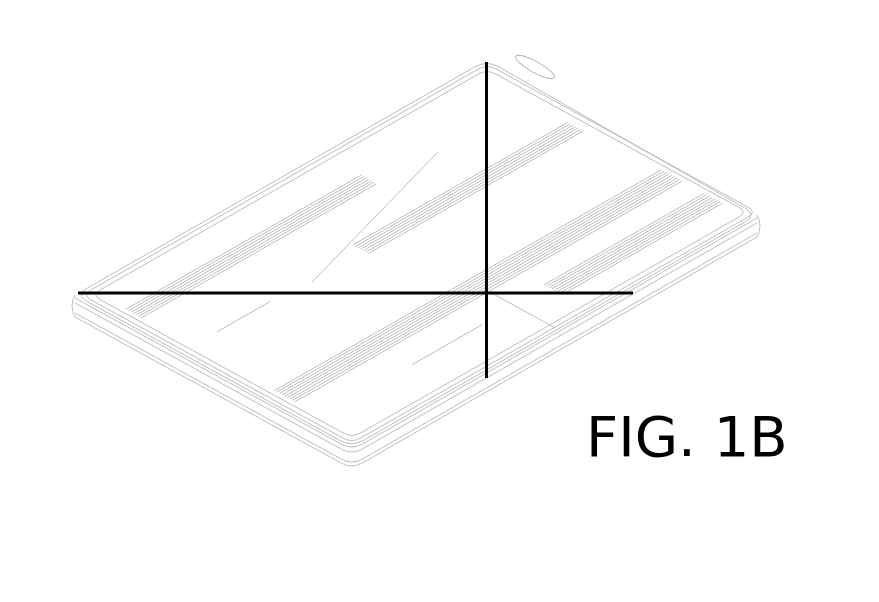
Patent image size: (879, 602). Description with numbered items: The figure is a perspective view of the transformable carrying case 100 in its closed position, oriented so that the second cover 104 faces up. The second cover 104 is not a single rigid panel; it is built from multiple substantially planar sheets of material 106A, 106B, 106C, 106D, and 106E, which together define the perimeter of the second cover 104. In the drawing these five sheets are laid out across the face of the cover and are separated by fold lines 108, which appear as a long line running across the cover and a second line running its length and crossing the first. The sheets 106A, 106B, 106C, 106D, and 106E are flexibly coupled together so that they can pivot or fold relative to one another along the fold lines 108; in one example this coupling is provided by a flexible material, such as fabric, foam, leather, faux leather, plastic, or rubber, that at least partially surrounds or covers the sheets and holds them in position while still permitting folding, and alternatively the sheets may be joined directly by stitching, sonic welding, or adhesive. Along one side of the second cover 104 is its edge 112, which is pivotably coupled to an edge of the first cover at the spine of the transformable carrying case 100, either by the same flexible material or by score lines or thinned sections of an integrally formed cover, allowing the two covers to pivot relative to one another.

The transformable carrying case 100 is at (407, 255).
The second cover 104 is at (420, 246).
The substantially planar sheet of material 106A is at (459, 265).
The substantially planar sheet of material 106B is at (571, 235).
The substantially planar sheet of material 106C is at (296, 350).
The substantially planar sheet of material 106D is at (578, 315).
The substantially planar sheet of material 106E is at (535, 340).
The fold lines 108 is at (478, 91).
The edge of the second cover 112 is at (142, 264).